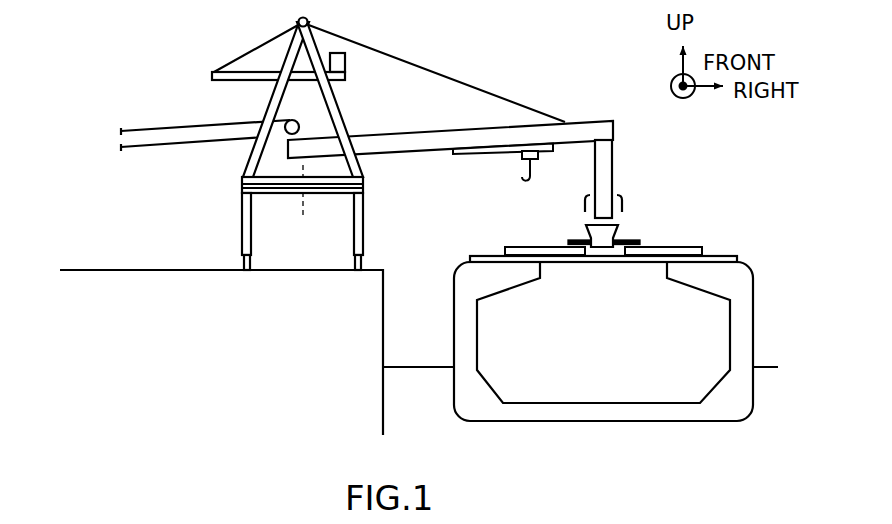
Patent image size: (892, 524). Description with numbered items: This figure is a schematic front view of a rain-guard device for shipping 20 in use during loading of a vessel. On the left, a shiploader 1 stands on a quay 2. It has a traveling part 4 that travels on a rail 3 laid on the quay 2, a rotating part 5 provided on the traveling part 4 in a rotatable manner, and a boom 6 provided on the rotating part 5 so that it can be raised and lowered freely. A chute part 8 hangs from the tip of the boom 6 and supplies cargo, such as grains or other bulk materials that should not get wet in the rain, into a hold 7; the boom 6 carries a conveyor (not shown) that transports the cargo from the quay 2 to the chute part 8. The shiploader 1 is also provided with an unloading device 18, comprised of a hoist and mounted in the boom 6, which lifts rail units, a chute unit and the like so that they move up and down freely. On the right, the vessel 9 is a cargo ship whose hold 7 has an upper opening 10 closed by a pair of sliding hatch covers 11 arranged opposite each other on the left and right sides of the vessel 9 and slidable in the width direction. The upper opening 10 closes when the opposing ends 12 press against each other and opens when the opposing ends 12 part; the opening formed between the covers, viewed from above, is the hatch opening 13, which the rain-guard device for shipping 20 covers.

The shiploader 1 is at (482, 49).
The quay 2 is at (152, 268).
The rail 3 is at (243, 263).
The traveling part 4 is at (240, 203).
The rotating part 5 is at (268, 99).
The boom 6 is at (574, 127).
The hold 7 is at (592, 390).
The chute part 8 is at (610, 152).
The vessel 9 is at (748, 238).
The upper opening 10 is at (612, 263).
The sliding hatch covers 11 is at (558, 252).
The opposing ends 12 is at (585, 250).
The hatch opening 13 is at (603, 263).
The unloading device 18 is at (519, 184).
The rain-guard device for shipping 20 is at (641, 218).